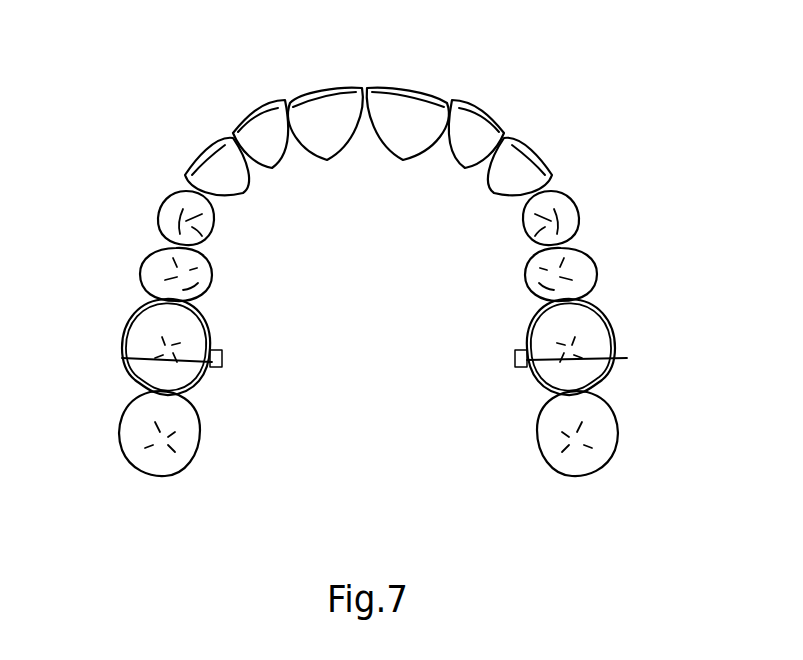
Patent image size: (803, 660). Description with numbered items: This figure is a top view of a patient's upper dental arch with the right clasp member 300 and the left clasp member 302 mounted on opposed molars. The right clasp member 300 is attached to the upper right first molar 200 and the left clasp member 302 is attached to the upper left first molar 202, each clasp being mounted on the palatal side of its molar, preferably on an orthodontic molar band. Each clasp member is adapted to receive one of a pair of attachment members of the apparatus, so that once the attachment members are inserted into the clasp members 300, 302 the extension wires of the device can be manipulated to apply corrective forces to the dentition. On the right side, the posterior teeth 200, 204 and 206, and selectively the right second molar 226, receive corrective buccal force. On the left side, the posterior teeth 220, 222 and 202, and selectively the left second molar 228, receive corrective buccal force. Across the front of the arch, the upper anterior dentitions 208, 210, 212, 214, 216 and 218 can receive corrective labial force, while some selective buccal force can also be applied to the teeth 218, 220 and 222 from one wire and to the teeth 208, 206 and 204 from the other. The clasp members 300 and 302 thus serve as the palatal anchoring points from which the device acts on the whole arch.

The upper right first molar 200 is at (143, 336).
The upper left first molar 202 is at (595, 337).
The upper right posterior tooth 204 is at (144, 263).
The upper right posterior tooth 206 is at (167, 207).
The upper anterior tooth 208 is at (207, 146).
The upper anterior tooth 210 is at (264, 101).
The upper anterior tooth 212 is at (334, 84).
The upper anterior tooth 214 is at (413, 84).
The upper anterior tooth 216 is at (482, 107).
The upper anterior tooth 218 is at (537, 151).
The upper left posterior tooth 220 is at (580, 216).
The upper left posterior tooth 222 is at (597, 272).
The right second molar 226 is at (138, 458).
The left second molar 228 is at (600, 457).
The right clasp member 300 is at (124, 358).
The left clasp member 302 is at (624, 359).